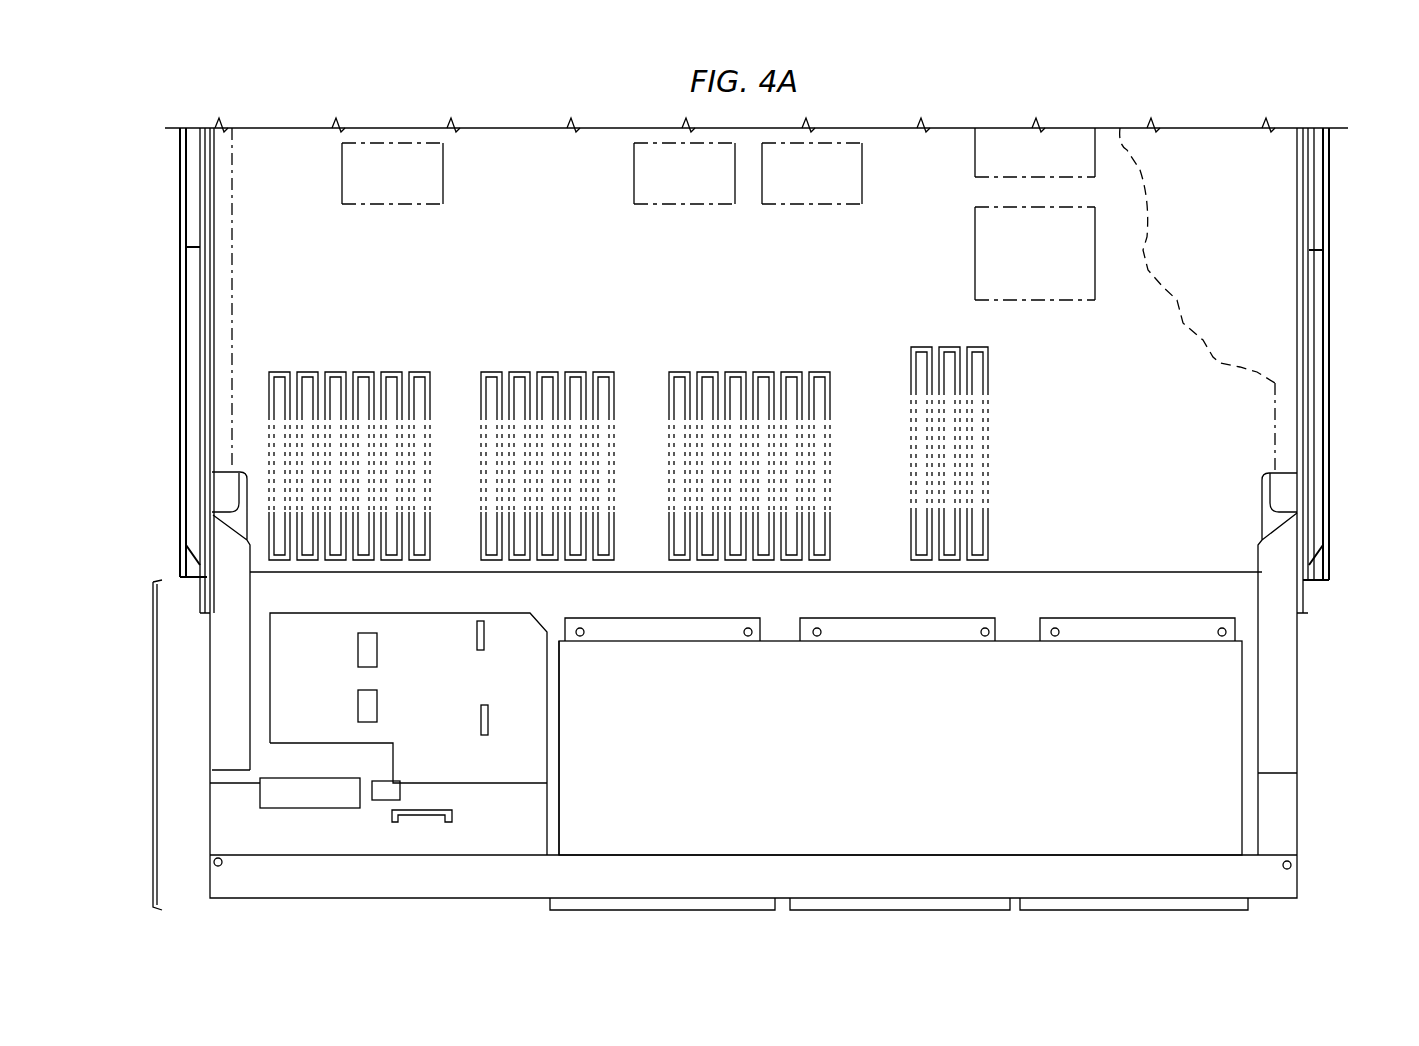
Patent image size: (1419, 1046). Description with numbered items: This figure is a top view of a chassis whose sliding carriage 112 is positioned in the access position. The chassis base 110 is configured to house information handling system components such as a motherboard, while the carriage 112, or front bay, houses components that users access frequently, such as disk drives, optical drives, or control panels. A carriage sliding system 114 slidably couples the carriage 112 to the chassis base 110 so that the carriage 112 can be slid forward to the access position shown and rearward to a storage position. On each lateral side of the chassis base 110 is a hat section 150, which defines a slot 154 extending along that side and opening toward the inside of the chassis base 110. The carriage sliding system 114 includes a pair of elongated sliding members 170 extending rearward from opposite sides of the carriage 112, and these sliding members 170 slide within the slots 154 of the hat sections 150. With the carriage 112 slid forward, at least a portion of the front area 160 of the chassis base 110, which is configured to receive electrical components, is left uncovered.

The chassis base 110 is at (1193, 143).
The carriage 112 is at (155, 744).
The carriage sliding system 114 is at (166, 543).
The hat section 150 is at (180, 165).
The slot 154 is at (190, 212).
The front area 160 is at (1224, 263).
The sliding member 170 is at (190, 396).